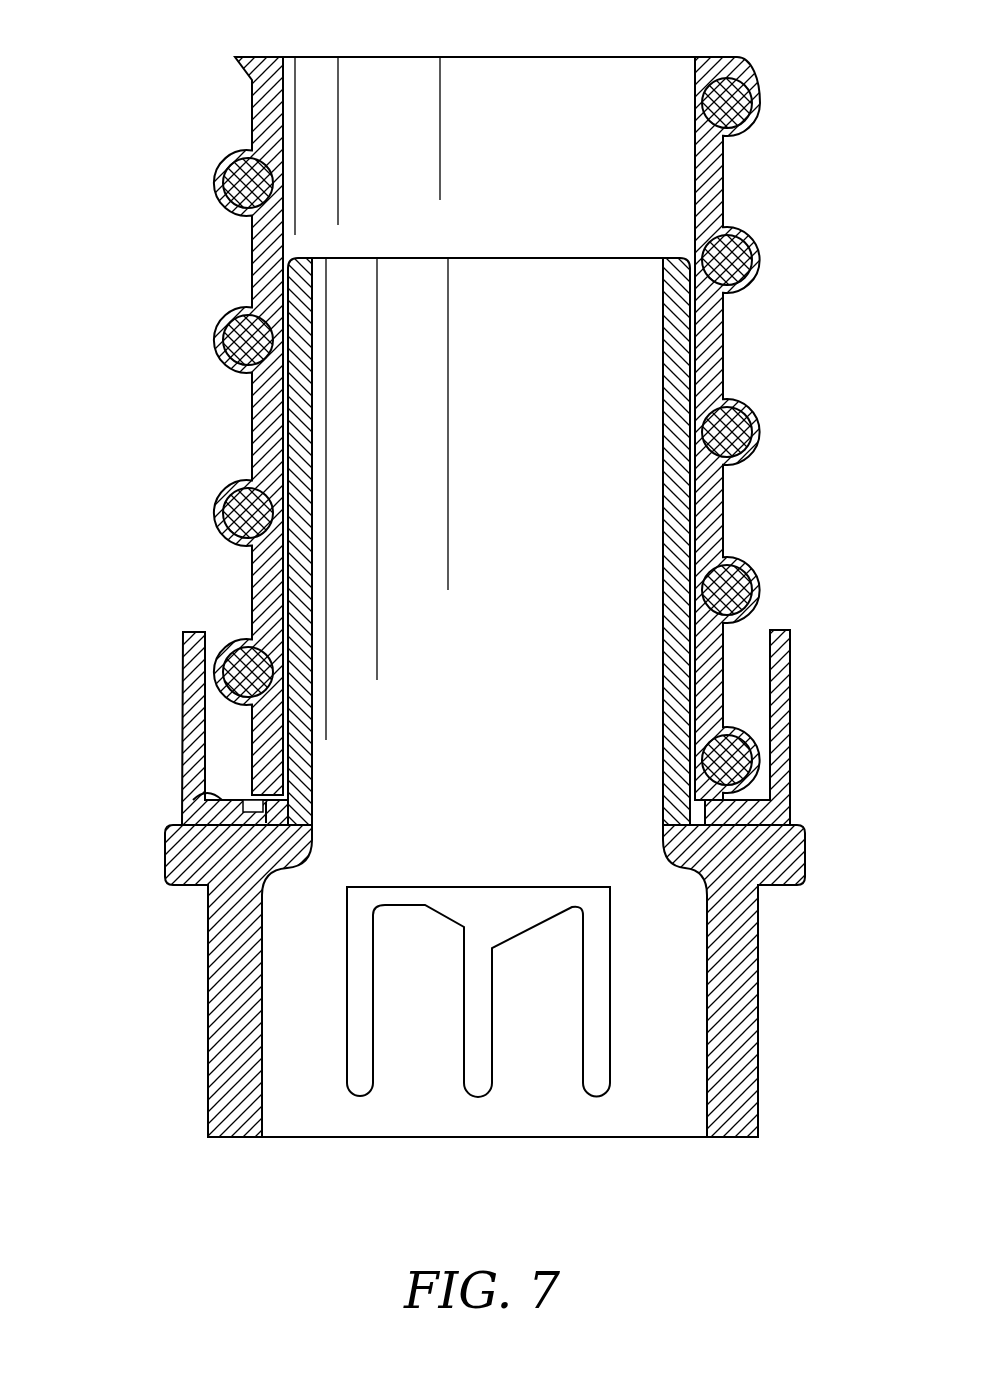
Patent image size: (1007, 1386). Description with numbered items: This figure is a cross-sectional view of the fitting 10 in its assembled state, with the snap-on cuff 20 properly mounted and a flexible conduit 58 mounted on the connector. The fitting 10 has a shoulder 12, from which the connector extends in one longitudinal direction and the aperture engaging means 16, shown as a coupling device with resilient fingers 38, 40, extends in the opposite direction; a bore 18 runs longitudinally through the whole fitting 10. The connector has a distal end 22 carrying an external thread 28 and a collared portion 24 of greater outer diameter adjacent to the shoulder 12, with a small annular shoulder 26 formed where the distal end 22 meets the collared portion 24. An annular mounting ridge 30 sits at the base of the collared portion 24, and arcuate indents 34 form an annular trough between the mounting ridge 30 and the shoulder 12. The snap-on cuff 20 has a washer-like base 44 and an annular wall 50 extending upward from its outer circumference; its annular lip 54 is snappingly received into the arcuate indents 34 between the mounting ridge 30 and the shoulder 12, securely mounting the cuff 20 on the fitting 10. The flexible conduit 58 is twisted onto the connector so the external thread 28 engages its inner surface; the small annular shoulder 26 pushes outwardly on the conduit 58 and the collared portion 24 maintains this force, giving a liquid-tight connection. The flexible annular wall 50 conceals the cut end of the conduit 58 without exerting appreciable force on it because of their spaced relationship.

The fitting 10 is at (802, 1094).
The shoulder 12 is at (198, 855).
The aperture engaging means 16 is at (214, 1046).
The bore 18 is at (487, 300).
The snap-on cuff 20 is at (160, 738).
The distal end 22 is at (293, 300).
The collared portion 24 is at (683, 698).
The small annular shoulder 26 is at (707, 590).
The external thread 28 is at (717, 377).
The annular mounting ridge 30 is at (283, 802).
The arcuate indents 34 is at (267, 823).
The resilient finger 38 is at (412, 1027).
The resilient finger 40 is at (523, 1037).
The washer-like base 44 is at (183, 808).
The annular wall 50 is at (186, 665).
The annular lip 54 is at (275, 860).
The flexible conduit 58 is at (718, 186).